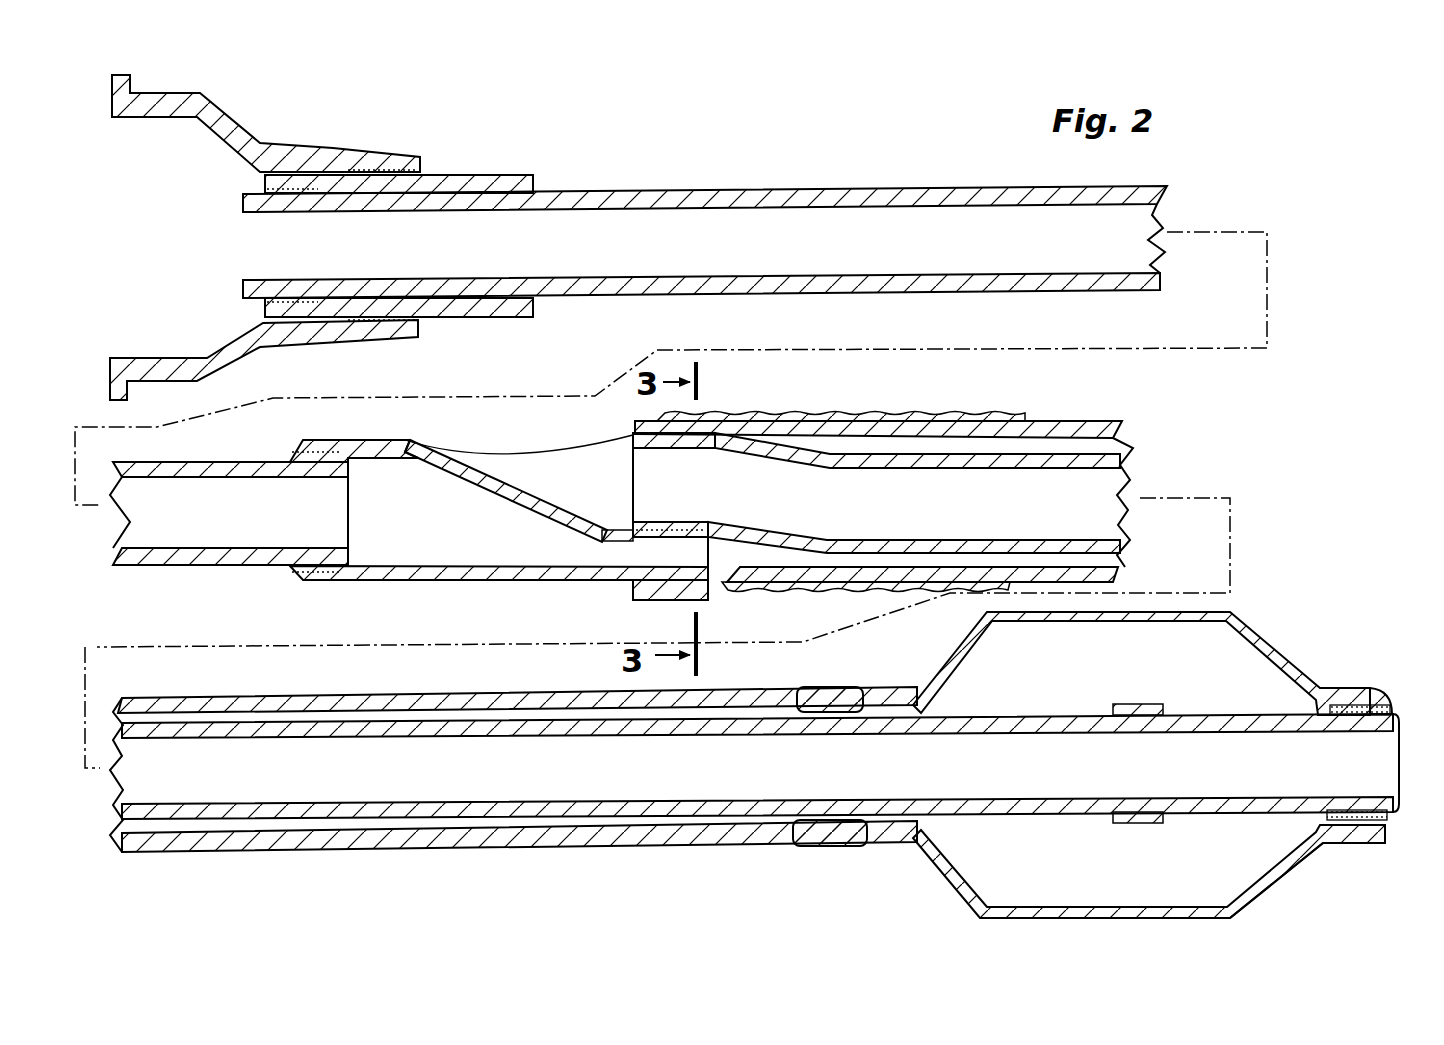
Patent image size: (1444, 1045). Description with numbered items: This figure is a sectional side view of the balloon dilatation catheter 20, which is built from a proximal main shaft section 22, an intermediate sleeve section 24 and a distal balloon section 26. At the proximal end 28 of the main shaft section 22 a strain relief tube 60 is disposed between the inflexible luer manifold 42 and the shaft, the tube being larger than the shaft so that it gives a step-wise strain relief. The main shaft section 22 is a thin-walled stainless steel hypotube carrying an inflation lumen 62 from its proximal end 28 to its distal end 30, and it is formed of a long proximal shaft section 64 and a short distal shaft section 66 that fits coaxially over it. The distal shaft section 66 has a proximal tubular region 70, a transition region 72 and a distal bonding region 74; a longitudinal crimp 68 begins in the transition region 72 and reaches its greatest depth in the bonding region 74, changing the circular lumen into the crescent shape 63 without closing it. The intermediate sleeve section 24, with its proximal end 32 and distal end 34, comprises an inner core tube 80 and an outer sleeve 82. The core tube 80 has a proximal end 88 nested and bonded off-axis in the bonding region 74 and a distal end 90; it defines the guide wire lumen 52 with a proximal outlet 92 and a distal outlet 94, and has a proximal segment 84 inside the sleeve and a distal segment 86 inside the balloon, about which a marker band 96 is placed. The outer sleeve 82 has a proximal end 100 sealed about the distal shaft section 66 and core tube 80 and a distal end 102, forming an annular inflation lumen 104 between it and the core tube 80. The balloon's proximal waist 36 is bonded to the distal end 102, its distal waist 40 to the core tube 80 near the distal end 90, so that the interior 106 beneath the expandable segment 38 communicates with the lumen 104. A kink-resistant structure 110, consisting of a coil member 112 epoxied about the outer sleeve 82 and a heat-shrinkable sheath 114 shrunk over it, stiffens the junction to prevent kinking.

The balloon dilatation catheter 20 is at (1280, 210).
The proximal main shaft section 22 is at (836, 186).
The intermediate sleeve section 24 is at (1098, 420).
The distal balloon section 26 is at (1285, 885).
The proximal end 28 is at (176, 266).
The distal end 30 is at (714, 546).
The proximal end 32 is at (618, 393).
The distal end 34 is at (822, 848).
The proximal waist 36 is at (878, 660).
The intermediate expandable segment 38 is at (1090, 620).
The distal waist 40 is at (1348, 693).
The luer manifold 42 is at (205, 108).
The guide wire lumen 52 is at (941, 516).
The strain relief tube 60 is at (460, 176).
The inflation lumen 62 is at (514, 266).
The crescent-shaped inflation lumen 63 is at (713, 592).
The proximal shaft section 64 is at (988, 190).
The distal shaft section 66 is at (378, 580).
The longitudinal crimp 68 is at (508, 478).
The proximal tubular region 70 is at (364, 458).
The transition region 72 is at (520, 498).
The distal bonding region 74 is at (670, 543).
The inner core tube 80 is at (1000, 460).
The outer sleeve 82 is at (1052, 420).
The proximal segment 84 is at (1040, 545).
The distal segment 86 is at (1077, 804).
The proximal end 88 is at (630, 512).
The distal end 90 is at (1396, 742).
The proximal outlet 92 is at (628, 470).
The distal outlet 94 is at (1401, 766).
The marker band 96 is at (1142, 704).
The proximal end 100 is at (645, 588).
The distal end 102 is at (868, 846).
The annular inflation lumen 104 is at (935, 448).
The interior 106 is at (1146, 901).
The kink-resistant structure 110 is at (738, 403).
The coil member 112 is at (795, 418).
The heat-shrinkable sheath 114 is at (855, 418).